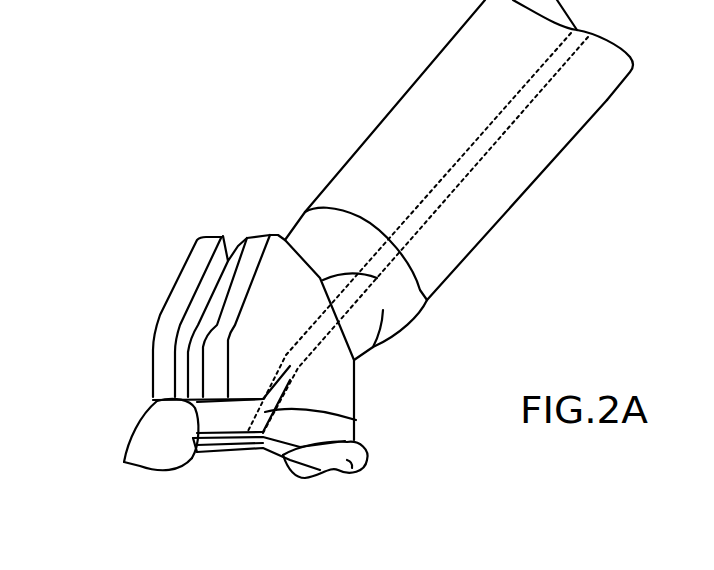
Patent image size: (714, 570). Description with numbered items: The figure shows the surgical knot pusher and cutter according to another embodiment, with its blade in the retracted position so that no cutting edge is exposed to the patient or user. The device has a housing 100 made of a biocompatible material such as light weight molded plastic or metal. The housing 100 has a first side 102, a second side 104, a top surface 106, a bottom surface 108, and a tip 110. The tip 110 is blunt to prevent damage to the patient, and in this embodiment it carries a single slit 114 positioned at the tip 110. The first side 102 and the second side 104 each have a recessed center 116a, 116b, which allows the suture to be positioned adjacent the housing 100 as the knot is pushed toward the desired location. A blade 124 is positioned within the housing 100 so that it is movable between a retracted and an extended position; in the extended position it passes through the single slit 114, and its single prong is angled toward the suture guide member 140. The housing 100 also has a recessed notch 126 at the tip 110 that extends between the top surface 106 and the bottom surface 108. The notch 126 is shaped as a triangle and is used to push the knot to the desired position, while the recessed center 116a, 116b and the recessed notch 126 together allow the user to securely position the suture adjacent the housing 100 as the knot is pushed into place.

The housing 100 is at (130, 282).
The first side 102 is at (192, 263).
The second side 104 is at (222, 460).
The top surface 106 is at (298, 306).
The bottom surface 108 is at (157, 400).
The tip 110 is at (163, 468).
The single slit 114 is at (240, 452).
The recessed center 116a is at (224, 236).
The recessed center 116b is at (227, 453).
The blade 124 is at (453, 163).
The recessed notch 126 is at (357, 420).
The suture guide member 140 is at (353, 470).